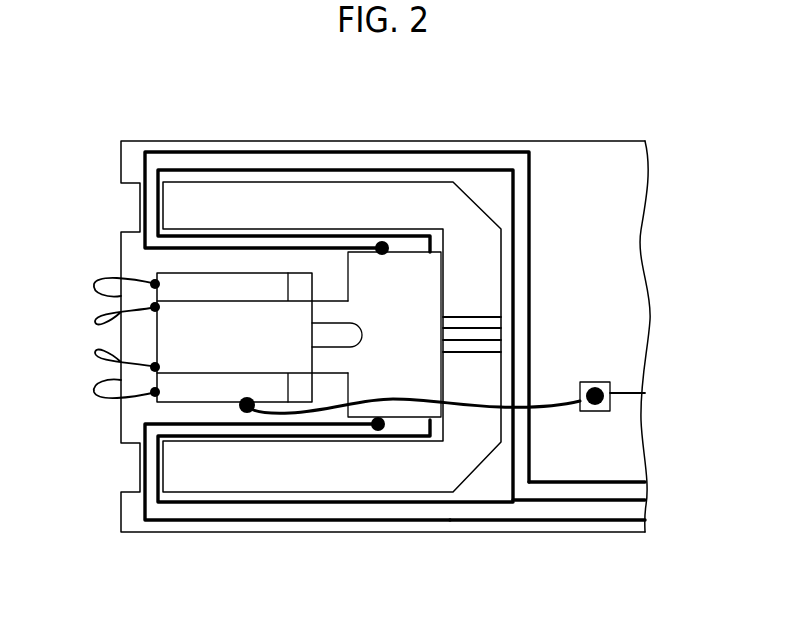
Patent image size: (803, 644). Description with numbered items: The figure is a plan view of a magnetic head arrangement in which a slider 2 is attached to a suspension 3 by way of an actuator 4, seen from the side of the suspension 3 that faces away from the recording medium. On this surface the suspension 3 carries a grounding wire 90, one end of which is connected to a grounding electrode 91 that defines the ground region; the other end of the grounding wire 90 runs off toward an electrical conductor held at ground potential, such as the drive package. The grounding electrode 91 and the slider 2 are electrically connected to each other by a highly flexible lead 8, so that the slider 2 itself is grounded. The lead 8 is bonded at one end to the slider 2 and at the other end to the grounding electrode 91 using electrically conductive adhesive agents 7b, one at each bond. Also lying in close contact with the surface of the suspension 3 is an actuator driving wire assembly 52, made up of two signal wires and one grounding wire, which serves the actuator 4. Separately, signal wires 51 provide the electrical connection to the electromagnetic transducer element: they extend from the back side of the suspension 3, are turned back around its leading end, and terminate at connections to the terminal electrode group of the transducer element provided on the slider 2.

The slider 2 is at (178, 338).
The suspension 3 is at (585, 150).
The actuator 4 is at (412, 275).
The signal wires 51 is at (465, 341).
The actuator driving wire assembly 52 is at (572, 483).
The electrically conductive adhesive agent 7b is at (600, 382).
The lead 8 is at (552, 402).
The grounding wire 90 is at (623, 397).
The grounding electrode 91 is at (607, 412).